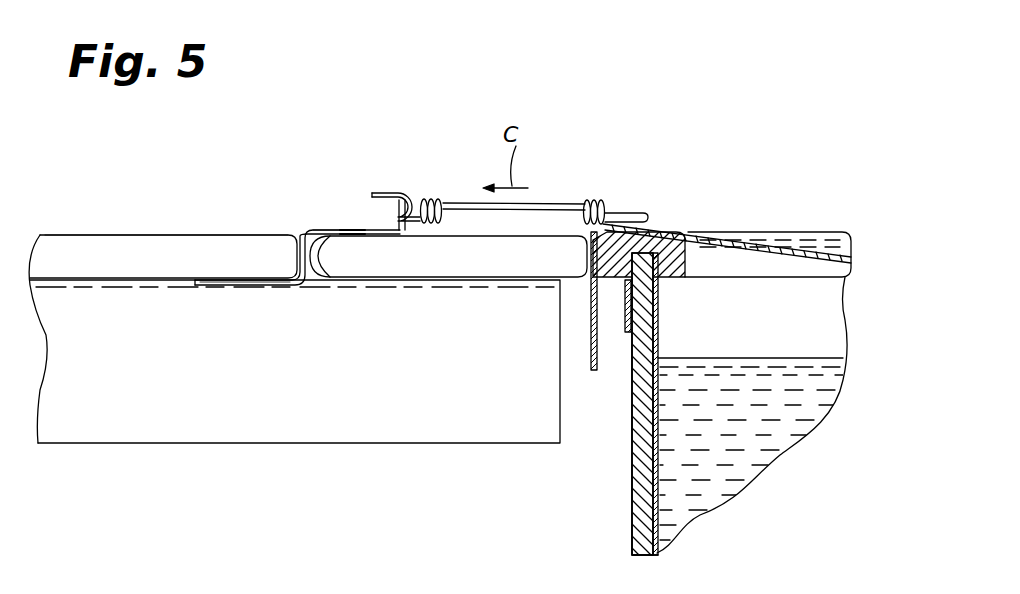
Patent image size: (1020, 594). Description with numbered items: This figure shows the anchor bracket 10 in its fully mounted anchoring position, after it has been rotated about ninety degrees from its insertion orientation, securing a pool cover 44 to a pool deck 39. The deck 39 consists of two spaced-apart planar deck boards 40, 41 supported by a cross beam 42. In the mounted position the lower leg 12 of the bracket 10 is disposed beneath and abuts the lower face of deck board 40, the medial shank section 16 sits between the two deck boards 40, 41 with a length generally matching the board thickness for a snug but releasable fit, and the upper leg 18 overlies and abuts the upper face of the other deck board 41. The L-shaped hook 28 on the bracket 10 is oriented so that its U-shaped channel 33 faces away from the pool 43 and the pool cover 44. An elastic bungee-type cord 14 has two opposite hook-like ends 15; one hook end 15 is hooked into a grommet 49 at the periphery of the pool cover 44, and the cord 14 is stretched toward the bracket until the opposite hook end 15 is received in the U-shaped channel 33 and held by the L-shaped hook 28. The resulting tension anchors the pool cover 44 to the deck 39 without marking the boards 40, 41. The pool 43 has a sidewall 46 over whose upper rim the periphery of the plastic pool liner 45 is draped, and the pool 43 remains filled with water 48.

The anchor bracket 10 is at (343, 168).
The lower leg 12 is at (232, 288).
The elastic bungee-type cord 14 is at (564, 198).
The hook-like end 15 is at (393, 202).
The medial shank section 16 is at (322, 262).
The upper leg 18 is at (352, 226).
The L-shaped hook 28 is at (408, 191).
The U-shaped channel 33 is at (378, 214).
The pool deck 39 is at (63, 232).
The deck board 40 is at (156, 269).
The deck board 41 is at (458, 269).
The cross beam 42 is at (298, 388).
The pool 43 is at (628, 500).
The pool cover 44 is at (731, 242).
The pool liner 45 is at (657, 330).
The sidewall 46 is at (629, 474).
The water 48 is at (744, 505).
The grommet 49 is at (657, 225).